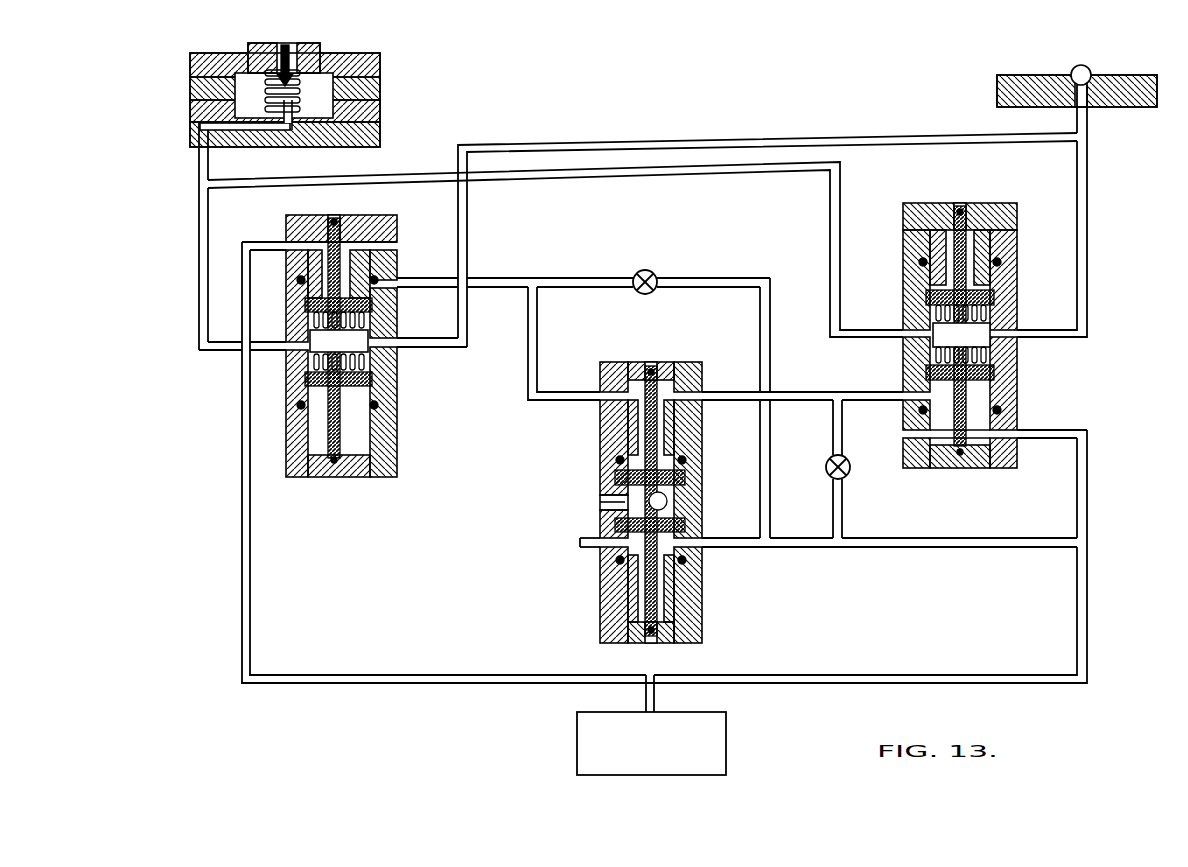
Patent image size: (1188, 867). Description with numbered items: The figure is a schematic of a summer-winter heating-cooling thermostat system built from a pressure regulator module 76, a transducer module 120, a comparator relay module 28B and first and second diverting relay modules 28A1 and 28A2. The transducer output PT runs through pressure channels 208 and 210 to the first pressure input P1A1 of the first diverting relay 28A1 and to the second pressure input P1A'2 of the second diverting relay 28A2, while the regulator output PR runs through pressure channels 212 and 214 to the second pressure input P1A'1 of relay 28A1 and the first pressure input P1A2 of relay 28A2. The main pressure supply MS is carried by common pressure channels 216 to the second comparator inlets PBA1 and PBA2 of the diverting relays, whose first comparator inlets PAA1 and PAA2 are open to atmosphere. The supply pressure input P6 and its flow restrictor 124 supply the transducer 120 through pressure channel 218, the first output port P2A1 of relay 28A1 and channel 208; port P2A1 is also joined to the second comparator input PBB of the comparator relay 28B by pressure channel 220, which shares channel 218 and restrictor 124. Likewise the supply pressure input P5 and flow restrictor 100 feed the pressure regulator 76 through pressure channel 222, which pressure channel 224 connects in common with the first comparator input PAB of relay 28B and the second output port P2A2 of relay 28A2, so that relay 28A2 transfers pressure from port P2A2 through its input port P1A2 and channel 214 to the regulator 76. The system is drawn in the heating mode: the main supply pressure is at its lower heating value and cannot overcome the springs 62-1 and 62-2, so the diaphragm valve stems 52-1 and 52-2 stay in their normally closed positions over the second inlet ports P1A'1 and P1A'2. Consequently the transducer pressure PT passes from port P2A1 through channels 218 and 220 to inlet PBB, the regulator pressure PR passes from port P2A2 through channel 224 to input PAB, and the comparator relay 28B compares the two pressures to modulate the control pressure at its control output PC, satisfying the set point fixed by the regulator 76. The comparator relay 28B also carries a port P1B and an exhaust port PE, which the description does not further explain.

The pressure regulator module 76 is at (424, 98).
The transducer module 120 is at (961, 101).
The pressure regulator output PR is at (209, 172).
The pressure channel 212 is at (199, 296).
The pressure channel 214 is at (345, 176).
The pressure channel 208 is at (826, 134).
The pressure channel 210 is at (1089, 263).
The common pressure channels 216 is at (1089, 480).
The pressure channel 218 is at (504, 278).
The pressure channel 220 is at (528, 401).
The pressure channel 222 is at (833, 418).
The pressure channel 224 is at (790, 392).
The flow restrictor 124 is at (641, 271).
The flow restrictor 100 is at (826, 473).
The transducer output PT is at (1088, 158).
The supply pressure input P6 is at (671, 280).
The supply pressure input P5 is at (842, 494).
The second comparator inlet PBA1 is at (270, 241).
The first comparator inlet PAA1 is at (397, 246).
The first output port P2A1 is at (397, 283).
The first pressure input P1A1 is at (400, 350).
The second pressure input P1A'1 is at (235, 364).
The diaphragm valve stem 52-1 is at (355, 341).
The spring 62-1 is at (395, 396).
The first diverting relay module 28A1 is at (365, 361).
The second diverting relay module 28A2 is at (982, 350).
The comparator relay module 28B is at (662, 502).
The diaphragm valve stem 52-2 is at (980, 334).
The spring 62-2 is at (980, 300).
The first pressure input P1A2 is at (880, 330).
The second pressure input P1A'2 is at (1090, 356).
The second output port P2A2 is at (897, 391).
The first comparator inlet PAA2 is at (902, 436).
The second comparator inlet PBA2 is at (1050, 430).
The second comparator input PBB is at (567, 392).
The first comparator input PAB is at (733, 392).
The port P1B is at (889, 558).
The control output PC is at (592, 549).
The exhaust port PE is at (592, 502).
The main pressure supply MS is at (777, 759).